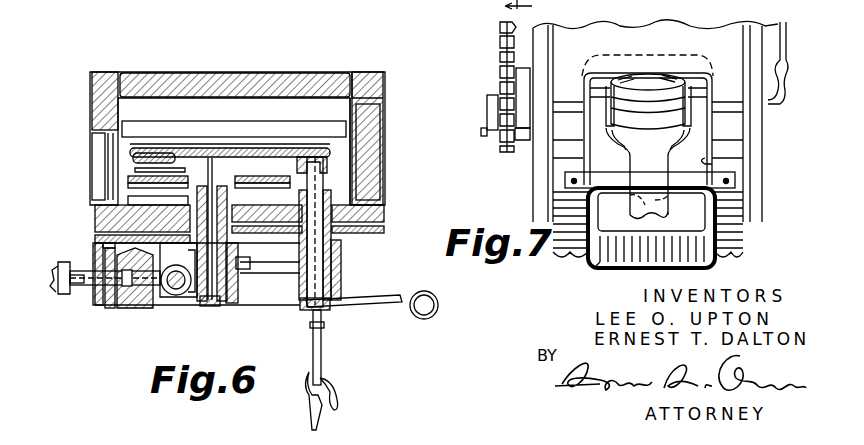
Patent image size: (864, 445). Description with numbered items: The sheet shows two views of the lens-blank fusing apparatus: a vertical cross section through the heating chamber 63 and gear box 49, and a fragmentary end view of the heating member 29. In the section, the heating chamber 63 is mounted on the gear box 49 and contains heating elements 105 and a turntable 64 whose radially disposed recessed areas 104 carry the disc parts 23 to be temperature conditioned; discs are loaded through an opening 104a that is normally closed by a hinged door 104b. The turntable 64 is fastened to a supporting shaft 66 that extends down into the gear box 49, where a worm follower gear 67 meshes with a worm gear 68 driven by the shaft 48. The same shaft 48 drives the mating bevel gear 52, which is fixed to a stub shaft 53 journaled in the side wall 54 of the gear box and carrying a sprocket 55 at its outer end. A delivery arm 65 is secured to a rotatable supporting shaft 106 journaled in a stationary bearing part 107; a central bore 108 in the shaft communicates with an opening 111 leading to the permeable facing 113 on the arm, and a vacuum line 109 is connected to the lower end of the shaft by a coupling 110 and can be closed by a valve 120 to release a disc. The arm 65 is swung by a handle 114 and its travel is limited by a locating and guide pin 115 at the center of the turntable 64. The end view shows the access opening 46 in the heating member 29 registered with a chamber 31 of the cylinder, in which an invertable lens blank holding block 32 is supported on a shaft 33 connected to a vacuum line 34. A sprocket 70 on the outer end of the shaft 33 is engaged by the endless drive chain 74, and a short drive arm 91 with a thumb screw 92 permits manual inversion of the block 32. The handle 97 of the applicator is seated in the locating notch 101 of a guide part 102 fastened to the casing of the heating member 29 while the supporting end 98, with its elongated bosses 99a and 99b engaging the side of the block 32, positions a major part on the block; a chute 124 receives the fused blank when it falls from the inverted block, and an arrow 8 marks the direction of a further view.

In FIG. 7, the section line arrow 8 is at (524, 7).
In FIG. 6, the disc part 23 is at (175, 178).
In FIG. 7, the heating member 29 is at (745, 143).
In FIG. 7, the chamber 31 is at (594, 143).
In FIG. 7, the lens blank holding block 32 is at (663, 80).
In FIG. 7, the shaft 33 is at (596, 82).
In FIG. 7, the vacuum line 34 is at (787, 40).
In FIG. 7, the access opening 46 is at (712, 163).
In FIG. 6, the shaft 48 is at (172, 296).
In FIG. 6, the gear box 49 is at (116, 322).
In FIG. 6, the bevel gear 52 is at (146, 308).
In FIG. 6, the stub shaft 53 is at (88, 288).
In FIG. 6, the side wall 54 is at (105, 305).
In FIG. 6, the sprocket 55 is at (60, 292).
In FIG. 6, the heating chamber 63 is at (354, 66).
In FIG. 6, the turntable 64 is at (180, 170).
In FIG. 6, the delivery arm 65 is at (262, 150).
In FIG. 6, the supporting shaft 66 is at (238, 286).
In FIG. 6, the worm follower gear 67 is at (236, 290).
In FIG. 6, the worm gear 68 is at (190, 292).
In FIG. 7, the sprocket 70 is at (522, 140).
In FIG. 7, the drive chain 74 is at (500, 44).
In FIG. 7, the drive arm 91 is at (487, 98).
In FIG. 7, the thumb screw 92 is at (484, 137).
In FIG. 7, the handle portion 97 is at (662, 210).
In FIG. 7, the lens blank receiving and supporting end 98 is at (680, 132).
In FIG. 7, the locating and supporting boss 99a is at (692, 115).
In FIG. 7, the locating and supporting boss 99b is at (606, 115).
In FIG. 7, the locating notch 101 is at (651, 228).
In FIG. 7, the guide part 102 is at (580, 185).
In FIG. 6, the recessed area 104 is at (140, 180).
In FIG. 6, the opening 104a is at (384, 84).
In FIG. 6, the hinged door 104b is at (372, 150).
In FIG. 6, the heating element 105 is at (150, 130).
In FIG. 6, the supporting shaft 106 is at (341, 263).
In FIG. 6, the bearing part 107 is at (302, 288).
In FIG. 6, the central bore 108 is at (322, 188).
In FIG. 6, the vacuum line 109 is at (322, 358).
In FIG. 6, the coupling 110 is at (325, 326).
In FIG. 6, the opening 111 is at (290, 150).
In FIG. 6, the permeable facing 113 is at (172, 163).
In FIG. 6, the handle 114 is at (436, 304).
In FIG. 6, the locating and guide pin 115 is at (207, 167).
In FIG. 6, the valve 120 is at (338, 385).
In FIG. 7, the chute 124 is at (596, 270).